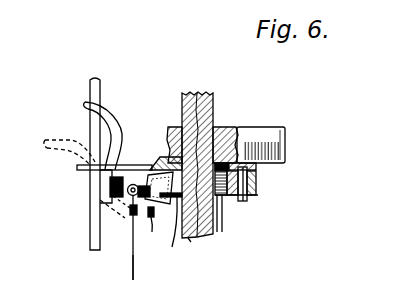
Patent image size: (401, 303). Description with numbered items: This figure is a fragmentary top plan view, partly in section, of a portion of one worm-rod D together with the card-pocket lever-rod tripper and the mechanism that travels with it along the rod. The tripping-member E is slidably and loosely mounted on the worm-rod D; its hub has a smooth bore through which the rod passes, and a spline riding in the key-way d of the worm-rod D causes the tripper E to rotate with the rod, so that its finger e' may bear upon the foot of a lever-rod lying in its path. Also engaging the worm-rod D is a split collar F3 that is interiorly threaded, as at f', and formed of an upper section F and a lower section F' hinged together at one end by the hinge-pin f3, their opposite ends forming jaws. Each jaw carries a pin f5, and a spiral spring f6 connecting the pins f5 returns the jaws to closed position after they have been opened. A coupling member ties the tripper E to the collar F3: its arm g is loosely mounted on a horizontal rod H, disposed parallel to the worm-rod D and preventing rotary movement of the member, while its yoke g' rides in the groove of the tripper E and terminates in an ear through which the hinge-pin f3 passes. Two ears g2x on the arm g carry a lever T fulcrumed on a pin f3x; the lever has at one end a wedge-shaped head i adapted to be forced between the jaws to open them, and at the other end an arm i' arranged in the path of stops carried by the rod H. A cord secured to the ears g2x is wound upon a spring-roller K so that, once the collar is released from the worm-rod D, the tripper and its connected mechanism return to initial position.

The worm-rod D is at (193, 93).
The ears g2x is at (137, 174).
The yoke g' is at (225, 130).
The tripping-member E is at (280, 127).
The finger e' is at (294, 145).
The upper section F is at (255, 179).
The lower section F' is at (266, 193).
The hinge-pin f3 is at (245, 201).
The interior threads f' is at (213, 229).
The split collar F3 is at (249, 268).
The arm i' is at (89, 124).
The lever block T is at (93, 191).
The horizontal rod H is at (90, 225).
The pin f3x is at (100, 201).
The arm g is at (137, 162).
The spiral spring f6 is at (163, 210).
The pin f5 is at (132, 218).
The spring-roller K is at (132, 265).
The wedge-shaped head i is at (170, 231).
The key-way d is at (195, 240).